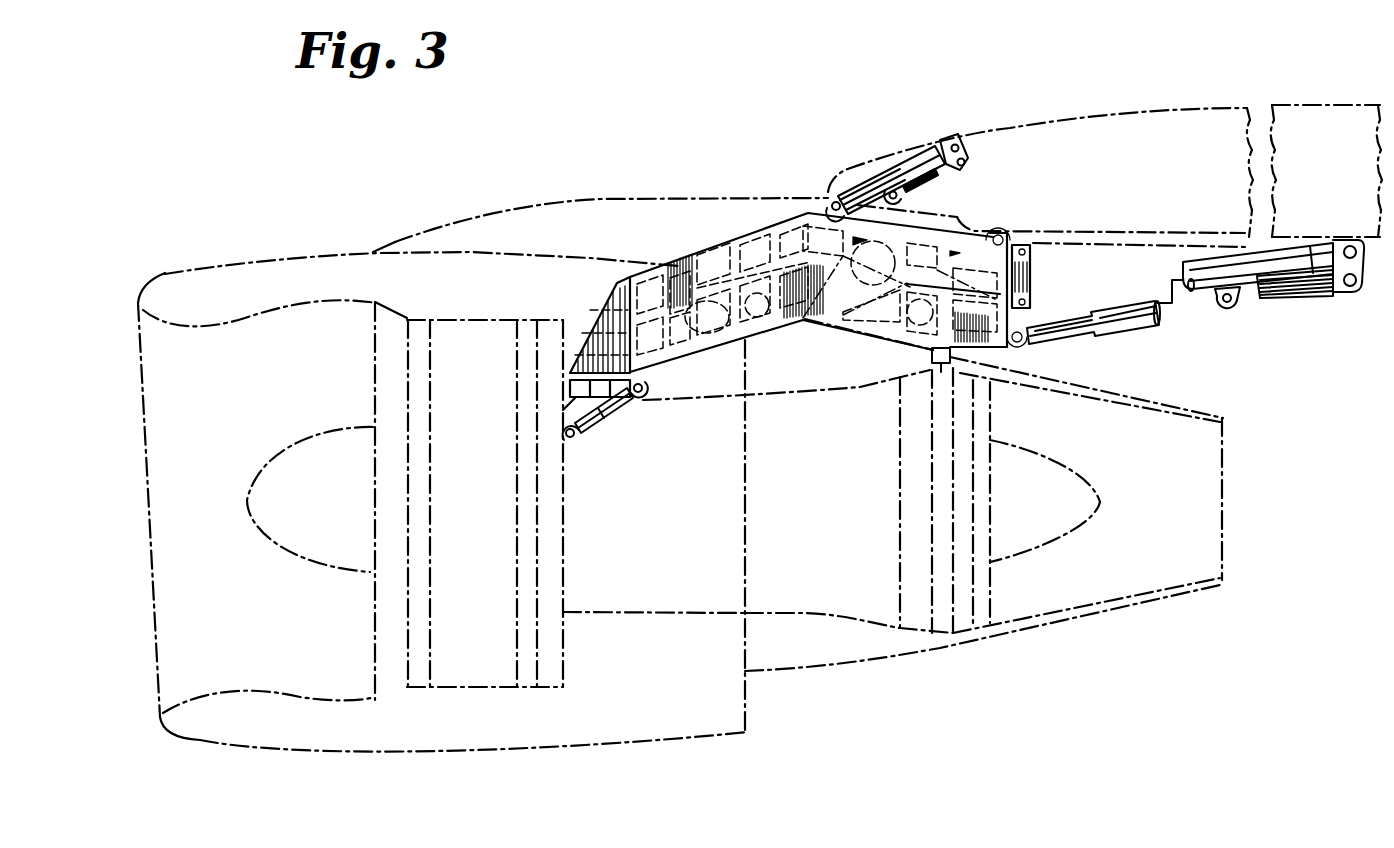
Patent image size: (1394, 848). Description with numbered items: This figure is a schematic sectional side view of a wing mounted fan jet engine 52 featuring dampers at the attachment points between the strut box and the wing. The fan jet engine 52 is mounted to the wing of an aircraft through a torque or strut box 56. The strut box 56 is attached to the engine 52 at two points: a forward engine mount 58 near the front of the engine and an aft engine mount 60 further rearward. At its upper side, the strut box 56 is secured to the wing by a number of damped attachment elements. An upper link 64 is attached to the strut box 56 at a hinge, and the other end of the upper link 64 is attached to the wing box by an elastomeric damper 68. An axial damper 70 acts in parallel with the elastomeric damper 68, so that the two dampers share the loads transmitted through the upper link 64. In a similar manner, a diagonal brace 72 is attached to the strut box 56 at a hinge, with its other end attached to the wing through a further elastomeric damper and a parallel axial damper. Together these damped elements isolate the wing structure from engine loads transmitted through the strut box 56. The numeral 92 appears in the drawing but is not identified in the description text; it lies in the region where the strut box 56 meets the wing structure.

The fan jet engine 52 is at (275, 258).
The strut box 56 is at (707, 240).
The forward engine mount 58 is at (622, 413).
The aft engine mount 60 is at (940, 363).
The upper link 64 is at (897, 160).
The elastomeric damper 68 is at (953, 137).
The axial damper 70 is at (943, 187).
The diagonal brace 72 is at (1143, 337).
The pylon structure 92 is at (1073, 240).